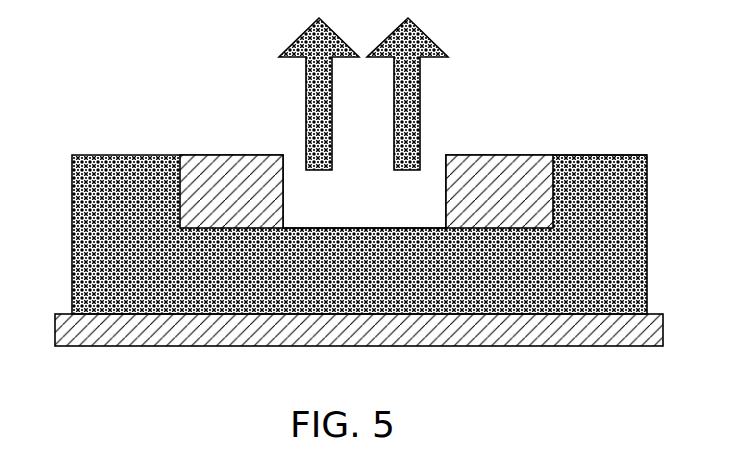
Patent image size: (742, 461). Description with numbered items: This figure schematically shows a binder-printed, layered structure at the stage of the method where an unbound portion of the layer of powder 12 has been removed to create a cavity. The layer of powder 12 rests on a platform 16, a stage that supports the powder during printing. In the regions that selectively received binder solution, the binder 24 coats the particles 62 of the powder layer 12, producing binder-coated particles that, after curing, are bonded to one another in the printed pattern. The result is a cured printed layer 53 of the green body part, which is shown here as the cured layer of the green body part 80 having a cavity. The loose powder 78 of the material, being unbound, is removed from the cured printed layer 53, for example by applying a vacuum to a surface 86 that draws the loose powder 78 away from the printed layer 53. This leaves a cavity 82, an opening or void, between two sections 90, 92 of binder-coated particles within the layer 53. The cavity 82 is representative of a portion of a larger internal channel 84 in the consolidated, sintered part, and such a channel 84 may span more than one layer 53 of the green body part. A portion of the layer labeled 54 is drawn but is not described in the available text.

The layer of powder 12 is at (647, 248).
The platform 16 is at (663, 333).
The binder 24 is at (540, 170).
The cured printed layer 53 is at (72, 270).
The upper portion of layer 54 is at (75, 190).
The particles 62 is at (647, 176).
The loose powder 78 is at (447, 35).
The cured layer of the green body part 80 is at (138, 82).
The cavity 82 is at (295, 147).
The internal channel 84 is at (347, 217).
The surface 86 is at (627, 157).
The section of binder-coated particles 90 is at (450, 137).
The section of binder-coated particles 92 is at (153, 140).